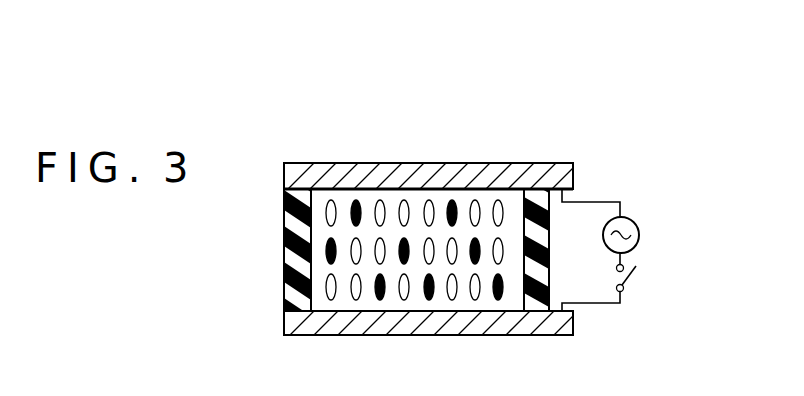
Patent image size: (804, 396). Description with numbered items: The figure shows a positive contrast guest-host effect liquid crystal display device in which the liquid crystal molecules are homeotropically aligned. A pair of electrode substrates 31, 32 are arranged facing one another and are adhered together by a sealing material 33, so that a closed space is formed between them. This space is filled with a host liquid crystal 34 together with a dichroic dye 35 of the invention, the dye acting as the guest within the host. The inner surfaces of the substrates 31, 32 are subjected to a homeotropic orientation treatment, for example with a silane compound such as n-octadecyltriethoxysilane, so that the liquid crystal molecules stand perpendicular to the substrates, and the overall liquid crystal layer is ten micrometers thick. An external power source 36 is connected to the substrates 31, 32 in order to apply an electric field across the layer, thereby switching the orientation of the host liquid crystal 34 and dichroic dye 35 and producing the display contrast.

The electrode substrate 31 is at (515, 168).
The electrode substrate 32 is at (495, 337).
The sealing material 33 is at (283, 217).
The host liquid crystal 34 is at (405, 200).
The dichroic dye 35 is at (456, 200).
The external power source 36 is at (640, 236).